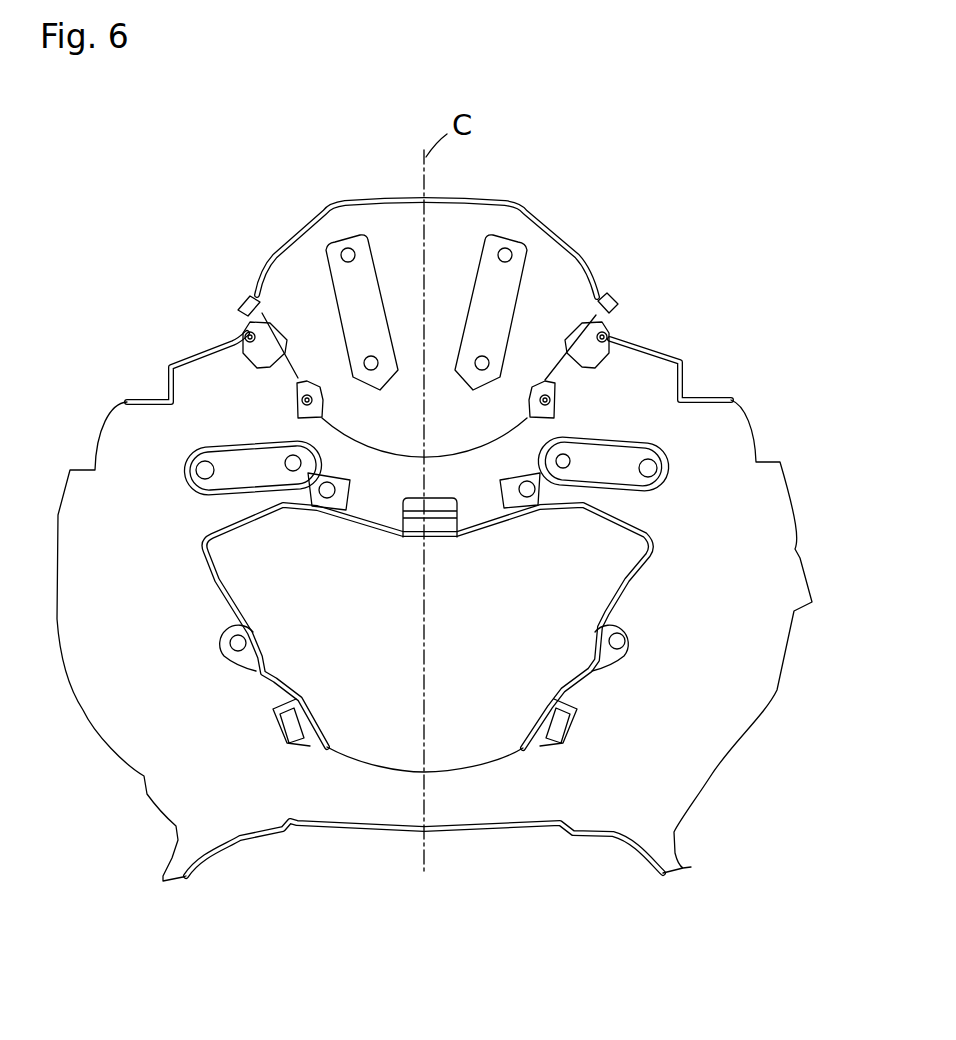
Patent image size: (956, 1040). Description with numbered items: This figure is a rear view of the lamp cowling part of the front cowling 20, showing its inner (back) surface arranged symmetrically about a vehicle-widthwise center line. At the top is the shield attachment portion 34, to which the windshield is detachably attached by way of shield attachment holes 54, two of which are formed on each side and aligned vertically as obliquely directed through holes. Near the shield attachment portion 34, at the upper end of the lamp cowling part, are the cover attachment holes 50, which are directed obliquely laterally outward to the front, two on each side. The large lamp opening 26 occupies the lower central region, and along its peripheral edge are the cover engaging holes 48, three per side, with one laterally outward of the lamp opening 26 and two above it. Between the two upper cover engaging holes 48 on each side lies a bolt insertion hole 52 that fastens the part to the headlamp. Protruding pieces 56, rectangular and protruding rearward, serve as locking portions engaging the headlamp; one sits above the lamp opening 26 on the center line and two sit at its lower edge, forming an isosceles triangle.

The front cowling 20 is at (696, 356).
The lamp opening 26 is at (653, 545).
The shield attachment portion 34 is at (473, 205).
The cover engaging holes 48 is at (322, 494).
The cover attachment holes 50 is at (302, 400).
The bolt insertion holes 52 is at (572, 447).
The shield attachment holes 54 is at (371, 364).
The protruding pieces 56 is at (300, 722).